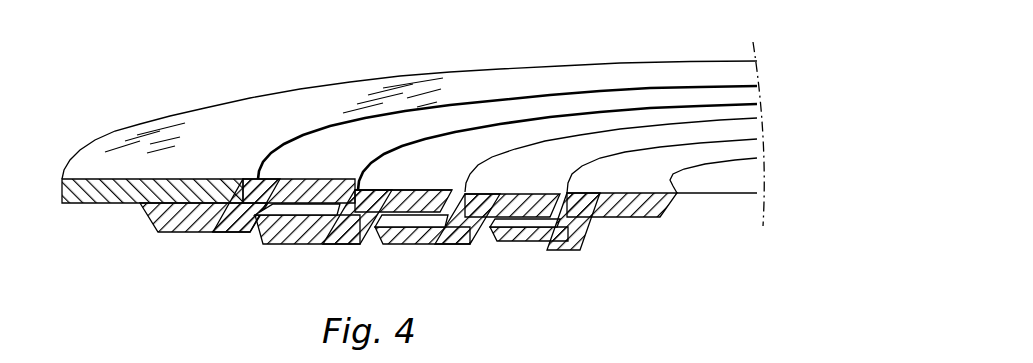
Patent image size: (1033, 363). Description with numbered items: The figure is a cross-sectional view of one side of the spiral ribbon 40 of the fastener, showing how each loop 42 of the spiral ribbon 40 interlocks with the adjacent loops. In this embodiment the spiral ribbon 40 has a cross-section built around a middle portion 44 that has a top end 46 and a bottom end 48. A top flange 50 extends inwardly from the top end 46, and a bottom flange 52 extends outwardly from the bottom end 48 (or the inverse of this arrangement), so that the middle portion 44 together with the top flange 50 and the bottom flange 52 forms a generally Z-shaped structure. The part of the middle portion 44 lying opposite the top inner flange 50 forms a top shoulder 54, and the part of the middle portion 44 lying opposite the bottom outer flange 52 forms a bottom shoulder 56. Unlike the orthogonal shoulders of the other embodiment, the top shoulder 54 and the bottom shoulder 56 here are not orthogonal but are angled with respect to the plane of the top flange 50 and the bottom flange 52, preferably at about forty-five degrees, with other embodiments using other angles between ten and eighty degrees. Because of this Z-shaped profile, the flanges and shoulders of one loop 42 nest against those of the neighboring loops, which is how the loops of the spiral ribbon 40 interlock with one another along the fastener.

The spiral ribbon 40 is at (108, 82).
The loop 42 is at (312, 98).
The middle portion 44 is at (246, 200).
The top end 46 is at (278, 167).
The bottom end 48 is at (240, 232).
The top flange 50 is at (317, 185).
The bottom flange 52 is at (176, 232).
The top shoulder 54 is at (363, 185).
The bottom shoulder 56 is at (587, 237).